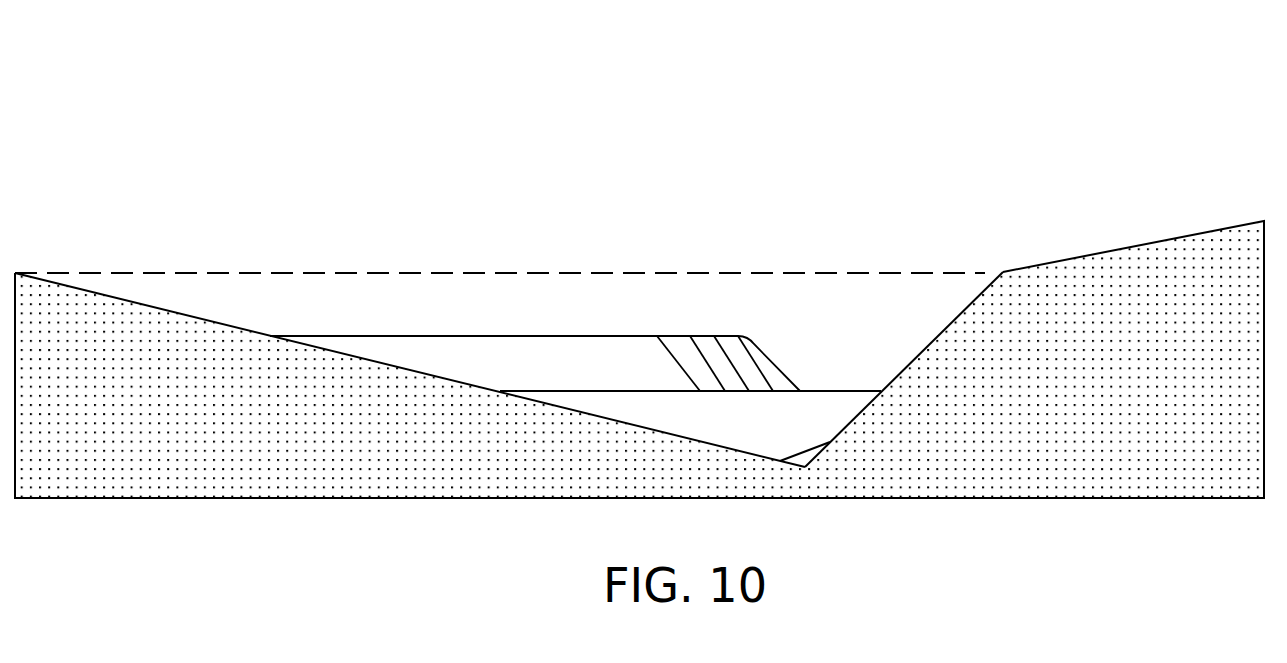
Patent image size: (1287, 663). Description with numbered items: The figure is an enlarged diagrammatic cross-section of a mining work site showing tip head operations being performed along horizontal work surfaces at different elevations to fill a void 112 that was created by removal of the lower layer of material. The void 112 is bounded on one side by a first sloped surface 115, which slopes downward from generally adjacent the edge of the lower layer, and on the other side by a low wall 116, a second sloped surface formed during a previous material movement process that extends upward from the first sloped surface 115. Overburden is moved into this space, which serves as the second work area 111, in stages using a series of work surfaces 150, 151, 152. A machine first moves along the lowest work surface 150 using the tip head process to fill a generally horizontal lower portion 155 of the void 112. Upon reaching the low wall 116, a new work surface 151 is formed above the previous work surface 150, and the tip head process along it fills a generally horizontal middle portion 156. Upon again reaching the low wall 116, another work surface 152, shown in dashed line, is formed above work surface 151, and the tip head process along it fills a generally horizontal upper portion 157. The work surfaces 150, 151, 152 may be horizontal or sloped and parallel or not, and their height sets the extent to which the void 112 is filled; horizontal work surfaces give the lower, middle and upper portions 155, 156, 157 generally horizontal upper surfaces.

The second work area 111 is at (918, 128).
The void 112 is at (802, 213).
The first sloped surface 115 is at (220, 323).
The low wall 116 is at (952, 320).
The work surface 150 is at (833, 391).
The work surface 151 is at (547, 336).
The work surface 152 is at (375, 270).
The lower portion 155 is at (770, 427).
The middle portion 156 is at (635, 370).
The upper portion 157 is at (453, 310).